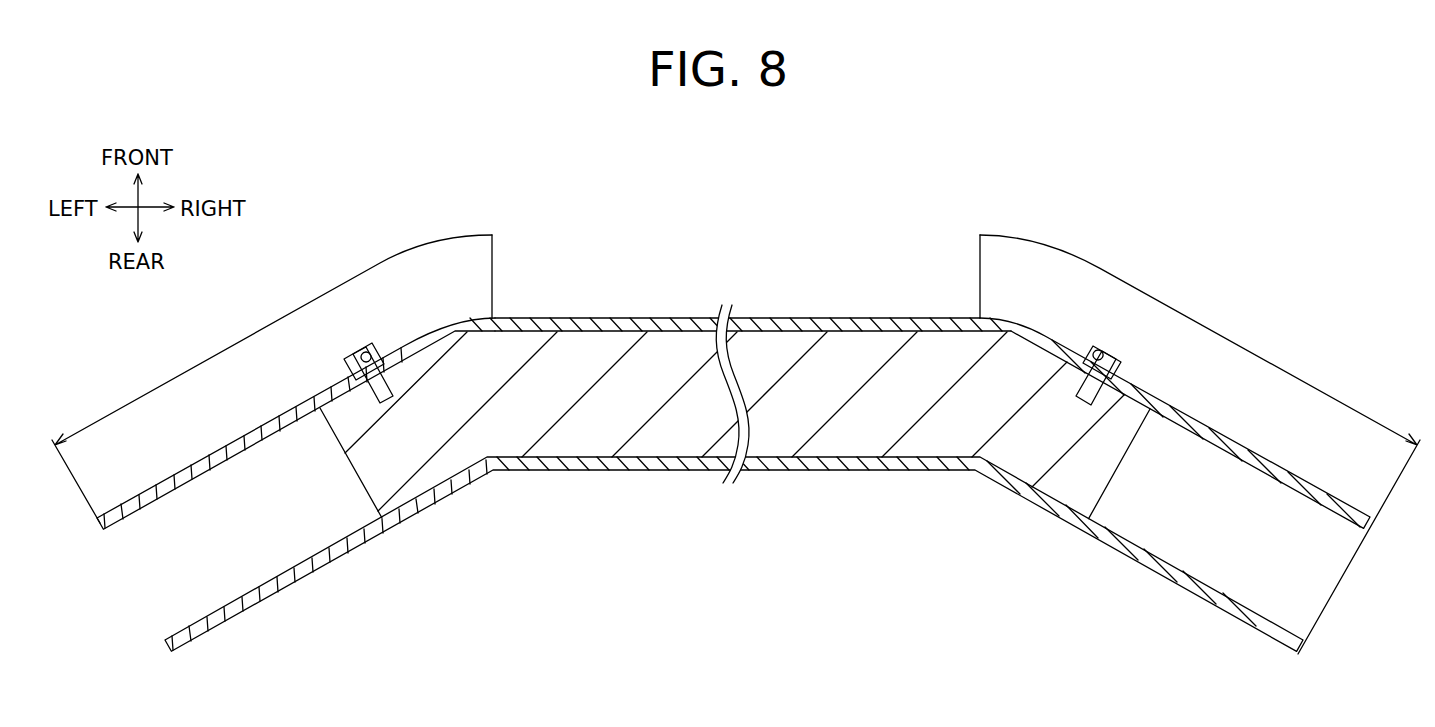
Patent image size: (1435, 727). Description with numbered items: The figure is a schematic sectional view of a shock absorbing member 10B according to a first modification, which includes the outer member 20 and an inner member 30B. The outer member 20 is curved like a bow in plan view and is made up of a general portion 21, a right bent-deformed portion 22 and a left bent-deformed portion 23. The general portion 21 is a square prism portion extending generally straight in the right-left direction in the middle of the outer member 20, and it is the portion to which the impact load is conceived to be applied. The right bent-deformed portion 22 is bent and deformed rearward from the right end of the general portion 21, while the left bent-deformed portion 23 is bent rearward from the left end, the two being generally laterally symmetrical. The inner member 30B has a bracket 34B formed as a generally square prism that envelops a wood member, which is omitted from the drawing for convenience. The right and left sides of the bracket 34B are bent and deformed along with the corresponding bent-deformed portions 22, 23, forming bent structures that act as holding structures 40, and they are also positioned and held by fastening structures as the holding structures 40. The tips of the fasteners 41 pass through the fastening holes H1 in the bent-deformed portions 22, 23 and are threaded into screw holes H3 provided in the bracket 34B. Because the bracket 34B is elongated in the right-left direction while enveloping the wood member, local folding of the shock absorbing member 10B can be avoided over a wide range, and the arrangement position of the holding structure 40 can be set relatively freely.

The shock absorbing member 10B is at (1113, 216).
The outer member 20 is at (233, 417).
The general portion 21 is at (968, 239).
The right bent-deformed portion 22 is at (1203, 326).
The left bent-deformed portion 23 is at (267, 325).
The holding structure 40 is at (767, 314).
The fastener 41 is at (352, 342).
The inner member 30B is at (623, 470).
The bracket 34B is at (734, 554).
The fastening hole H1 is at (370, 353).
The screw hole H3 is at (380, 403).